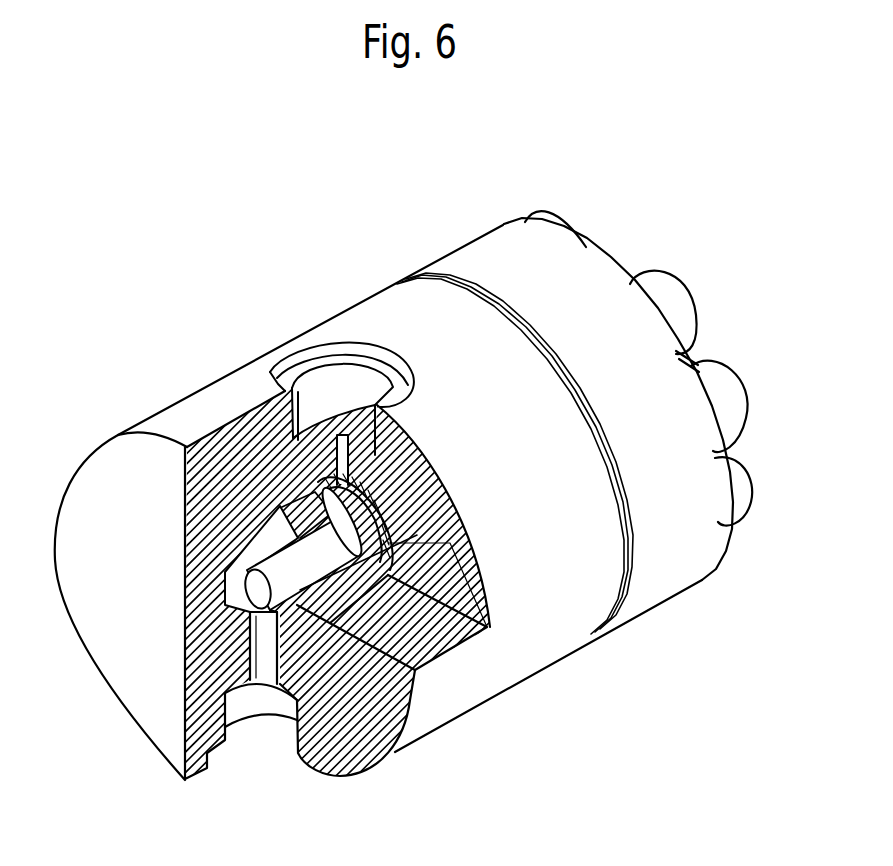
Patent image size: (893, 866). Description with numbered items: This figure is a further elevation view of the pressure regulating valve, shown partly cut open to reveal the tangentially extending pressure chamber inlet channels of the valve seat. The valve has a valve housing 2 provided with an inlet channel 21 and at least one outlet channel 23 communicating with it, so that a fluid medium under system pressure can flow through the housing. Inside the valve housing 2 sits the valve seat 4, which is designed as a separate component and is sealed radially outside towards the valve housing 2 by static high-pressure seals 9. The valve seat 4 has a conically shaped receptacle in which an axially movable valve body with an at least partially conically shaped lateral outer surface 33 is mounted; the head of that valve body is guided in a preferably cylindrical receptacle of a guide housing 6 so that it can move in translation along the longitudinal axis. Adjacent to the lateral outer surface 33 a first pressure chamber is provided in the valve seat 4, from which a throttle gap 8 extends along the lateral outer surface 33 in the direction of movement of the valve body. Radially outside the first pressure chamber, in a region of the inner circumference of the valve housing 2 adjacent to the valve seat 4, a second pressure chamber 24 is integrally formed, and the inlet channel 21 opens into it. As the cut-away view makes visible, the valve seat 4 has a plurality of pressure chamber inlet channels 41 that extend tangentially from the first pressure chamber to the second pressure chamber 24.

The valve housing 2 is at (557, 664).
The valve seat 4 is at (336, 640).
The guide housing 6 is at (667, 568).
The throttle gap 8 is at (262, 540).
The static high-pressure seals 9 is at (343, 598).
The inlet channel 21 is at (340, 385).
The outlet channel 23 is at (263, 703).
The second pressure chamber 24 is at (328, 425).
The lateral outer surface 33 is at (287, 580).
The pressure chamber inlet channels 41 is at (450, 545).